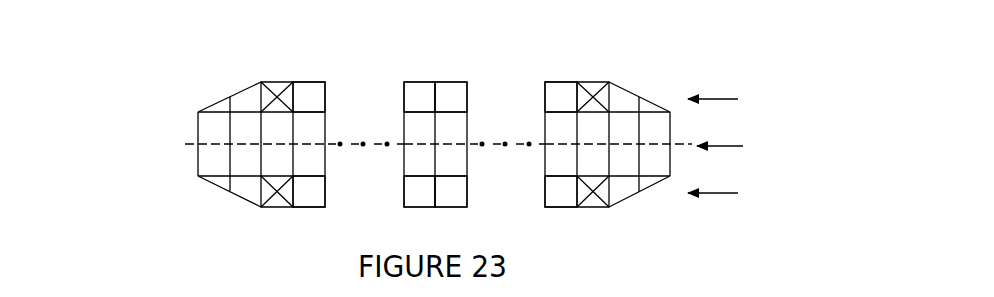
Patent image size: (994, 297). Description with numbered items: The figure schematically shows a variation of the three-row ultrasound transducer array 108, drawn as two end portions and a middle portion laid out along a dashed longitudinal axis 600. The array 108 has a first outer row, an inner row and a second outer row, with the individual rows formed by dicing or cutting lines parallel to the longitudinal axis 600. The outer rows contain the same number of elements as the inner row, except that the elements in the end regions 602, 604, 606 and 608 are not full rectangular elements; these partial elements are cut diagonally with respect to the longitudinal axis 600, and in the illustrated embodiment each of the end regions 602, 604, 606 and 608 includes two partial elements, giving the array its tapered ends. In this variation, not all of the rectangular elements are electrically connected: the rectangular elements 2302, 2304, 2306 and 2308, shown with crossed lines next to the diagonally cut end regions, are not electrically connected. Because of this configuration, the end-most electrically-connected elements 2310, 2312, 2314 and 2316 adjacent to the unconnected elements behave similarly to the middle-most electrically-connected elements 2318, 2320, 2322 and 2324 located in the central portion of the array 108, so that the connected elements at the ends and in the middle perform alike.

The two-dimensional transducer array 108 is at (128, 65).
The longitudinal axis 600 is at (188, 144).
The end region 602 is at (203, 91).
The end region 604 is at (200, 193).
The end region 606 is at (668, 82).
The end region 608 is at (667, 203).
The rectangular element 2302 is at (592, 82).
The rectangular element 2304 is at (278, 82).
The rectangular element 2306 is at (592, 207).
The rectangular element 2308 is at (278, 207).
The end-most electrically-connected element 2310 is at (308, 82).
The end-most electrically-connected element 2312 is at (563, 82).
The end-most electrically-connected element 2314 is at (563, 207).
The end-most electrically-connected element 2316 is at (308, 207).
The middle-most electrically-connected element 2318 is at (422, 82).
The middle-most electrically-connected element 2320 is at (450, 82).
The middle-most electrically-connected element 2322 is at (450, 207).
The middle-most electrically-connected element 2324 is at (420, 207).